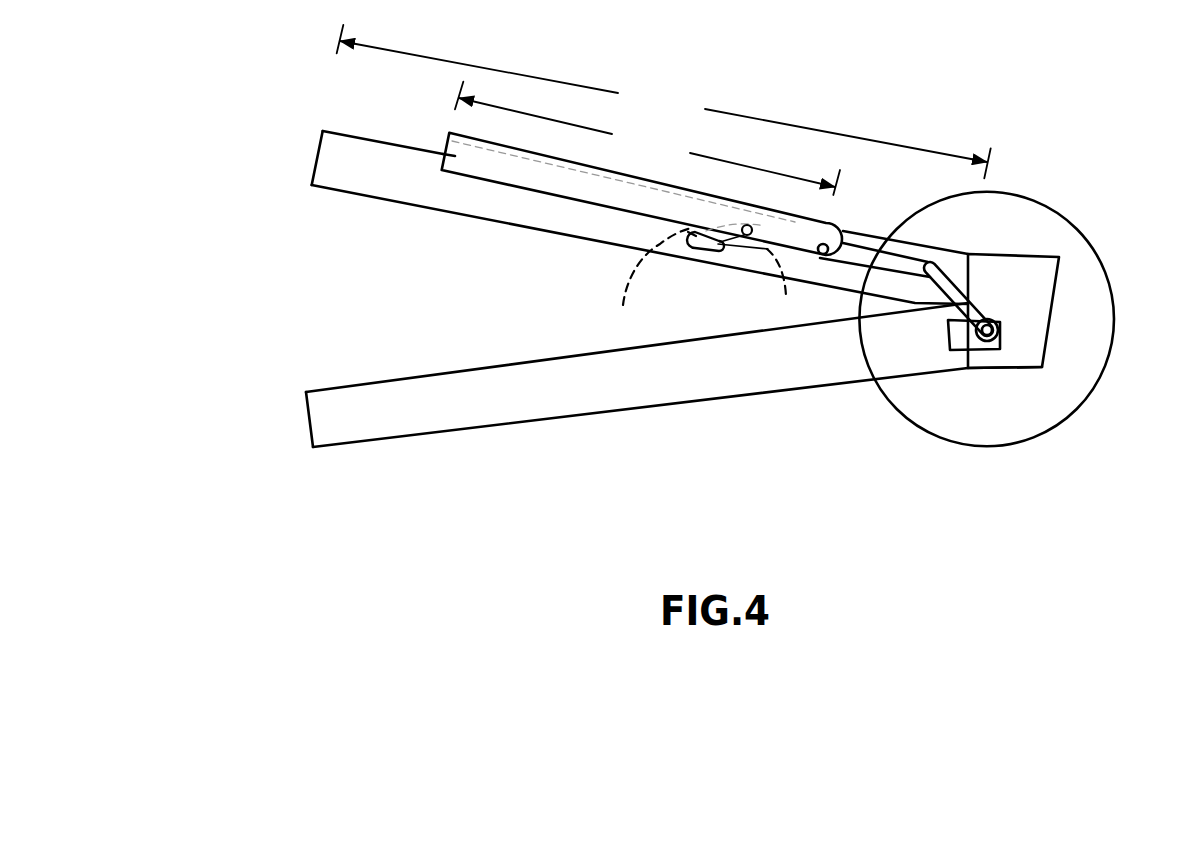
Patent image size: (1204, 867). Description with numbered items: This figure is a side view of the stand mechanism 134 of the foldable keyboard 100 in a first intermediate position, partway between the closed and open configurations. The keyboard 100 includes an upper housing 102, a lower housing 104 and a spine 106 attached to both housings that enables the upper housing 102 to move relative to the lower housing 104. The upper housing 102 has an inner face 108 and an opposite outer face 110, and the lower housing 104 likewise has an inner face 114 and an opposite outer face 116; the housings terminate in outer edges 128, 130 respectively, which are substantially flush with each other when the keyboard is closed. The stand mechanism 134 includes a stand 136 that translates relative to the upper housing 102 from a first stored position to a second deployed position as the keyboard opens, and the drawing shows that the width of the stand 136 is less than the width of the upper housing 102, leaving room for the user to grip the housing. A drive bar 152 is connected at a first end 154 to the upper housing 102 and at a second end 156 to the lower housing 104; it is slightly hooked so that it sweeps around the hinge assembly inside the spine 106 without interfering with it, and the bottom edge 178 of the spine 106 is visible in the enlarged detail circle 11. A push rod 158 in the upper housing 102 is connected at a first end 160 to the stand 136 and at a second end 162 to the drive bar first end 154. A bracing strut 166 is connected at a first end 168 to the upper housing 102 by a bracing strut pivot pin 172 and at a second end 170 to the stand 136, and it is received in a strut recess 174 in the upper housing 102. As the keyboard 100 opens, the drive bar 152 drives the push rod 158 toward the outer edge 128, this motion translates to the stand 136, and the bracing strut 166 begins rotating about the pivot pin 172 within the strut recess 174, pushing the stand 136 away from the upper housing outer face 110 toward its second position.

The foldable keyboard 100 is at (216, 252).
The upper housing 102 is at (329, 111).
The lower housing 104 is at (340, 453).
The spine 106 is at (1050, 379).
The inner face 108 is at (497, 221).
The detail circle 11 is at (1017, 194).
The outer face 110 is at (376, 141).
The inner face 114 is at (405, 380).
The outer face 116 is at (437, 436).
The outer edge 128 is at (317, 158).
The outer edge 130 is at (306, 419).
The stand mechanism 134 is at (455, 183).
The stand 136 is at (481, 178).
The drive bar 152 is at (994, 303).
The first end 154 is at (933, 265).
The second end 156 is at (1000, 330).
The push rod 158 is at (859, 254).
The first end 160 is at (822, 255).
The second end 162 is at (922, 268).
The bracing strut 166 is at (744, 236).
The first end 168 is at (691, 248).
The second end 170 is at (786, 289).
The bracing strut pivot pin 172 is at (627, 300).
The strut recess 174 is at (690, 230).
The bottom edge 178 is at (990, 368).